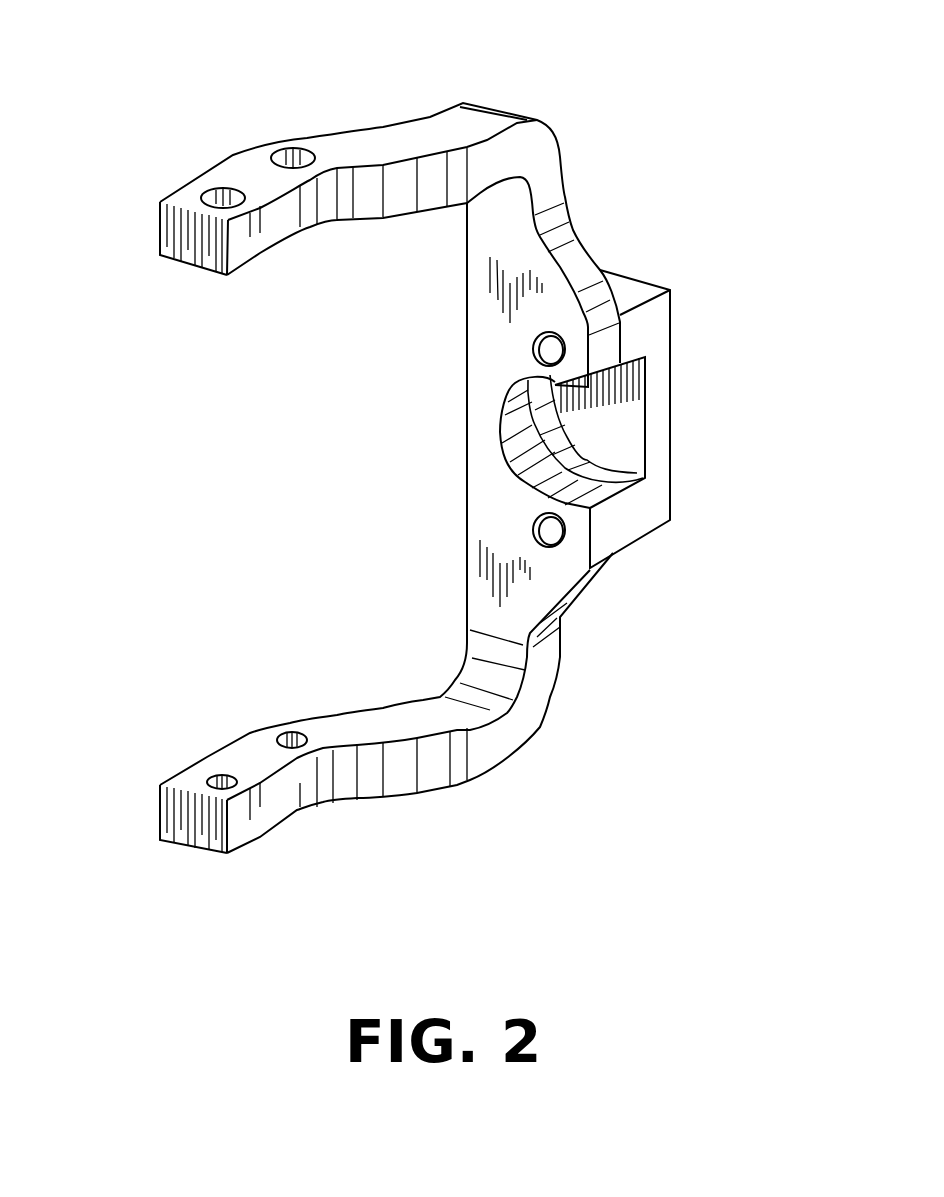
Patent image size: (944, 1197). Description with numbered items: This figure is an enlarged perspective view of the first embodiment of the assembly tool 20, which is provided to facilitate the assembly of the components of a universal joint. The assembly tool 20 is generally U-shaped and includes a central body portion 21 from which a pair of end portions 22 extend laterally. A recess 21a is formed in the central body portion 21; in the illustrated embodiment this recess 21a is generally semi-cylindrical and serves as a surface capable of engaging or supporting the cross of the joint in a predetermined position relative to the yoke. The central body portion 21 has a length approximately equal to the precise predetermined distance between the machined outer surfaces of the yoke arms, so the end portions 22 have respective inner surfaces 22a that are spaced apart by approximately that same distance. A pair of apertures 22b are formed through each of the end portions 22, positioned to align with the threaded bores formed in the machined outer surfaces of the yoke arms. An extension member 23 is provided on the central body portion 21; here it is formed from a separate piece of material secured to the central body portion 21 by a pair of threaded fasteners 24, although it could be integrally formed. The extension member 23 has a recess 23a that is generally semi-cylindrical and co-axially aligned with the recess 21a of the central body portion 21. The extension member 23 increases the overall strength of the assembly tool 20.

The assembly tool 20 is at (645, 91).
The central body portion 21 is at (483, 288).
The recess 21a is at (518, 490).
The end portions 22 is at (408, 137).
The inner surfaces 22a is at (193, 266).
The apertures 22b is at (233, 197).
The extension member 23 is at (657, 333).
The recess 23a is at (582, 469).
The threaded fasteners 24 is at (538, 348).